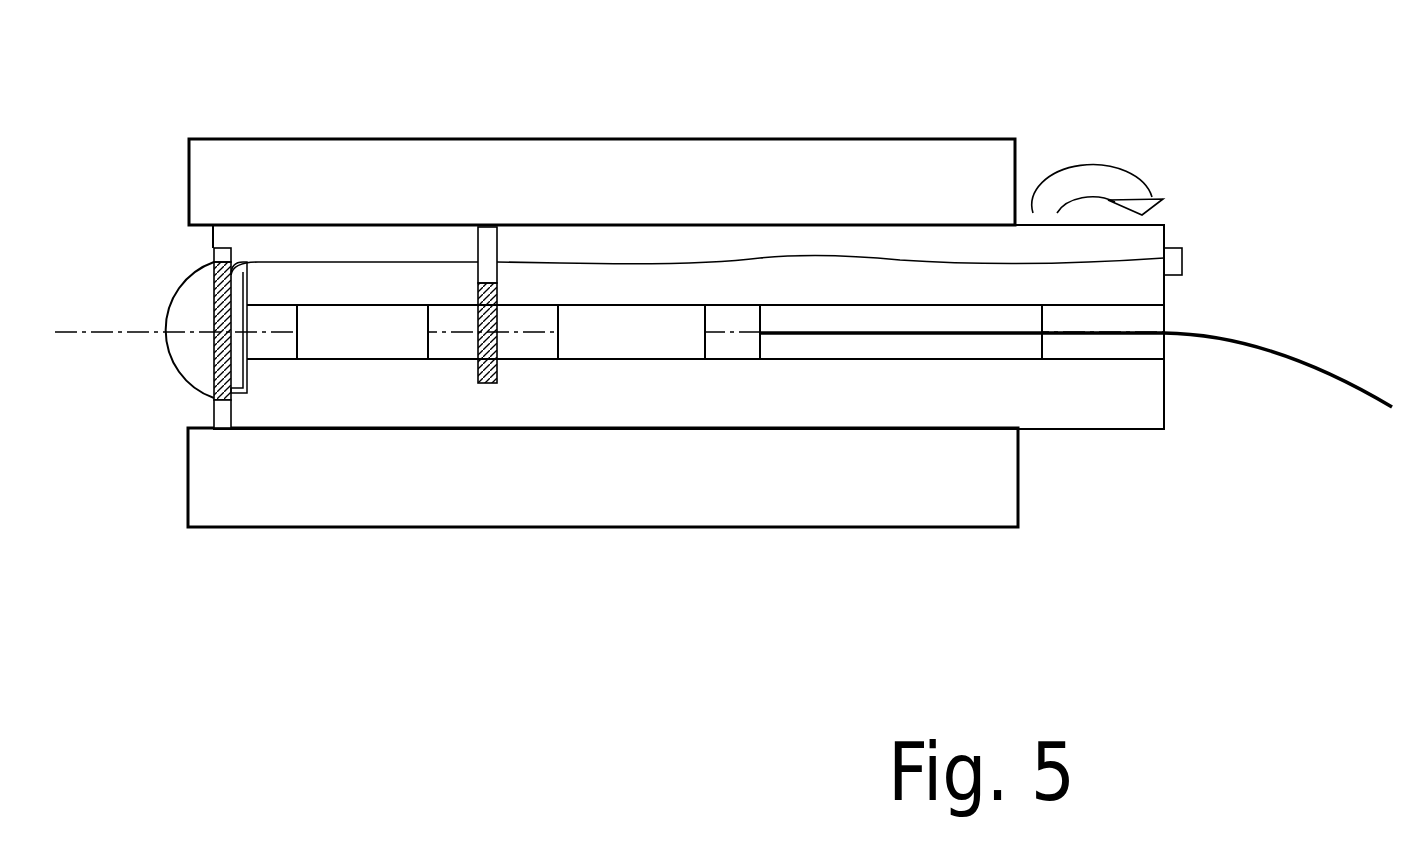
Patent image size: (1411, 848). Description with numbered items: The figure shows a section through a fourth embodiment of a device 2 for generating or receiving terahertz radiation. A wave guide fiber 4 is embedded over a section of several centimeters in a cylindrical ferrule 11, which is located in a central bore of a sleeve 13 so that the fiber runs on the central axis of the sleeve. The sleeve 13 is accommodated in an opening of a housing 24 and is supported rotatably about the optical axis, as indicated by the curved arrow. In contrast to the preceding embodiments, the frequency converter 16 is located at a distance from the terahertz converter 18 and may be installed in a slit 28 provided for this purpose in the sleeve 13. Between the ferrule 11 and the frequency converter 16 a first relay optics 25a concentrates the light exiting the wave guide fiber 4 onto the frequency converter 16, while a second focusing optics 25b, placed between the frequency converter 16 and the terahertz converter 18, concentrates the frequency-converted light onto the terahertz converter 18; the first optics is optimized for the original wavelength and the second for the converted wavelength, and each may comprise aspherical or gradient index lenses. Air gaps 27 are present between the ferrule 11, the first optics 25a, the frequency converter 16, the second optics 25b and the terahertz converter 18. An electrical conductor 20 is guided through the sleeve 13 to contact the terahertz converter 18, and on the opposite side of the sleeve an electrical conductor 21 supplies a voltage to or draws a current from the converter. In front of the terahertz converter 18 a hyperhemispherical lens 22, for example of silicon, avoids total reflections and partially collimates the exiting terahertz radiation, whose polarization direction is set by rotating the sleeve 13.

The device 2 is at (282, 95).
The wave guide fiber 4 is at (1263, 348).
The ferrule 11 is at (1030, 347).
The sleeve 13 is at (985, 408).
The frequency converter 16 is at (498, 376).
The terahertz converter 18 is at (226, 395).
The electrical conductor 20 is at (772, 255).
The electrical conductor 21 is at (1185, 245).
The hyperhemispherical lens 22 is at (175, 396).
The housing 24 is at (833, 177).
The first relay optics 25a is at (632, 352).
The second focusing optics 25b is at (332, 352).
The air gaps 27 is at (730, 315).
The slit 28 is at (487, 243).